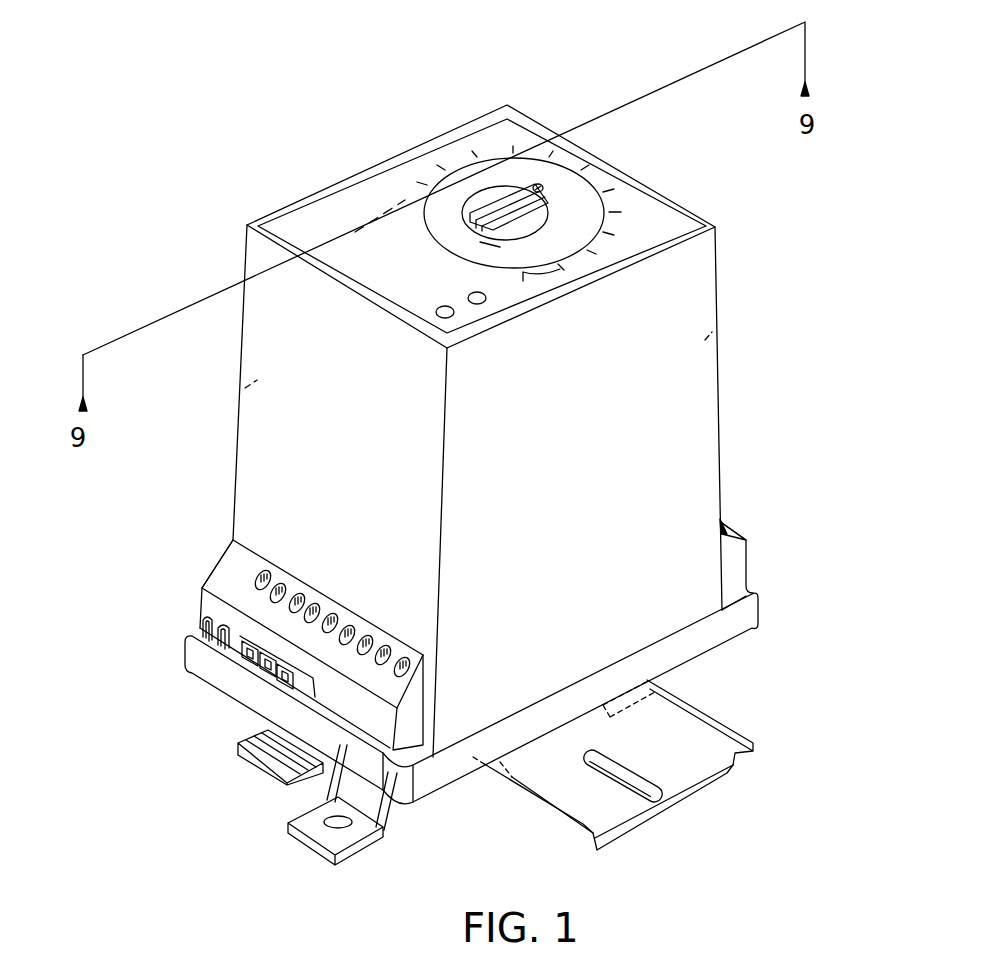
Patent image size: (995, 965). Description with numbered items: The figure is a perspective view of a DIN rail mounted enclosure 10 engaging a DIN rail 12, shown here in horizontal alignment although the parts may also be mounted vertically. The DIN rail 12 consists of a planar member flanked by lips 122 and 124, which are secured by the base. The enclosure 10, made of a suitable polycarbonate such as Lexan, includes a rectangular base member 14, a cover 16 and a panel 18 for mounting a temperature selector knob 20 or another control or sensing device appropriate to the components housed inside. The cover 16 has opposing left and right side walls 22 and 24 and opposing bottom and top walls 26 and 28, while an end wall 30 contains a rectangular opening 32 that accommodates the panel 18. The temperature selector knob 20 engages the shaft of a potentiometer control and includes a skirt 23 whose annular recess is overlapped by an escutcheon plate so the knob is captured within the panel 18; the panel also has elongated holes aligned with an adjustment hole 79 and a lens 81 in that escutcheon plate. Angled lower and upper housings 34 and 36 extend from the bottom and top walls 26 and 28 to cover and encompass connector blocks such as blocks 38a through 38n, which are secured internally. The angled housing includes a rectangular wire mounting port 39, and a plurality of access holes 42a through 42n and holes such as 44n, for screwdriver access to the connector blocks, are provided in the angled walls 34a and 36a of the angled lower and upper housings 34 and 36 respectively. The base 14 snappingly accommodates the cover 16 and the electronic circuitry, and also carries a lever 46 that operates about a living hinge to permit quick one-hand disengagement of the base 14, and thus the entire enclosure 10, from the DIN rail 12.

The DIN rail mounted enclosure 10 is at (853, 115).
The DIN rail 12 is at (692, 780).
The base member 14 is at (775, 612).
The cover 16 is at (743, 395).
The panel 18 is at (382, 271).
The temperature selector knob 20 is at (537, 213).
The left side wall 22 is at (562, 499).
The skirt 23 is at (463, 247).
The right side wall 24 is at (233, 400).
The bottom wall 26 is at (356, 462).
The top wall 28 is at (722, 322).
The end wall 30 is at (660, 193).
The rectangular opening 32 is at (687, 210).
The angled lower housing 34 is at (230, 565).
The angled wall 34a is at (217, 578).
The angled upper housing 36 is at (737, 558).
The angled wall 36a is at (746, 540).
The connector block 38a is at (247, 655).
The connector block 38n is at (290, 679).
The rectangular wire mounting port 39 is at (330, 708).
The access hole 42a is at (255, 575).
The access hole 42n is at (420, 652).
The access hole 44n is at (722, 522).
The lever 46 is at (257, 760).
The adjustment hole 79 is at (437, 317).
The lens 81 is at (477, 303).
The lip 122 is at (550, 798).
The lip 124 is at (720, 730).